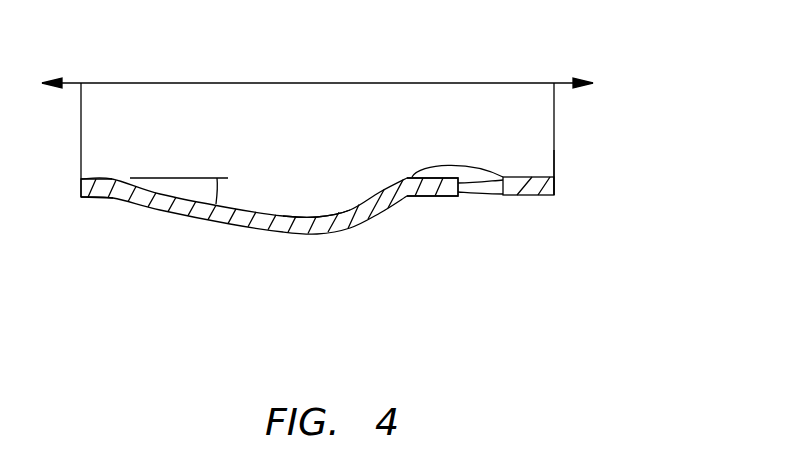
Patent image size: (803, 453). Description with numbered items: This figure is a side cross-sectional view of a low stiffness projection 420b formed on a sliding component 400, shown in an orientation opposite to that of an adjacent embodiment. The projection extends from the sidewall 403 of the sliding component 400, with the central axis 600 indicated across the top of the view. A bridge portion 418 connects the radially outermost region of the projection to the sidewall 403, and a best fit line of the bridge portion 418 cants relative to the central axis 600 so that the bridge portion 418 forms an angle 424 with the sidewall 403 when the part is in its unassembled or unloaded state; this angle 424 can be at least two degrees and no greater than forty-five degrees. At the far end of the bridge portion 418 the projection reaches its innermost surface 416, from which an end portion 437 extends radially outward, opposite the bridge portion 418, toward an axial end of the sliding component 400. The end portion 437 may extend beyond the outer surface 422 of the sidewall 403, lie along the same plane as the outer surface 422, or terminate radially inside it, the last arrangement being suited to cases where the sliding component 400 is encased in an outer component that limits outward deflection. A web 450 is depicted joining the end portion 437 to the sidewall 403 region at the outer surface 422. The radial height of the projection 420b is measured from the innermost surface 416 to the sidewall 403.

The sliding component 400 is at (410, 152).
The sidewall 403 is at (552, 197).
The innermost surface 416 is at (330, 236).
The bridge portion 418 is at (236, 222).
The low stiffness projection 420b is at (161, 208).
The outer surface of the sidewall 422 is at (516, 197).
The angle 424 is at (220, 191).
The end portion 437 is at (433, 198).
The connecting web 450 is at (472, 200).
The central axis 600 is at (563, 82).